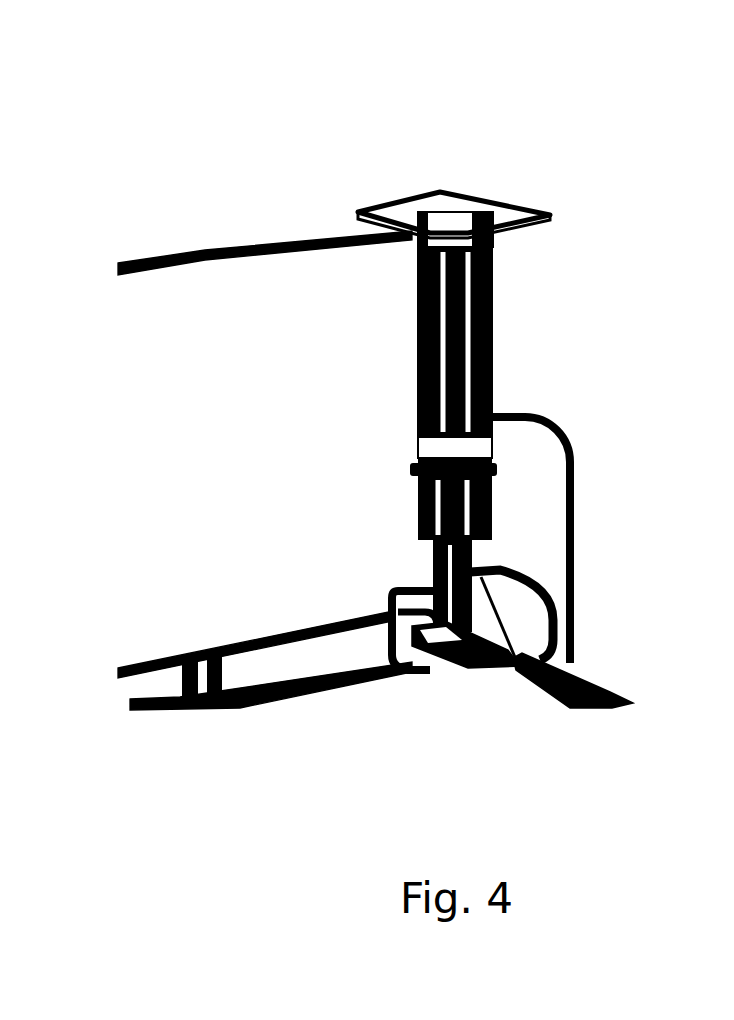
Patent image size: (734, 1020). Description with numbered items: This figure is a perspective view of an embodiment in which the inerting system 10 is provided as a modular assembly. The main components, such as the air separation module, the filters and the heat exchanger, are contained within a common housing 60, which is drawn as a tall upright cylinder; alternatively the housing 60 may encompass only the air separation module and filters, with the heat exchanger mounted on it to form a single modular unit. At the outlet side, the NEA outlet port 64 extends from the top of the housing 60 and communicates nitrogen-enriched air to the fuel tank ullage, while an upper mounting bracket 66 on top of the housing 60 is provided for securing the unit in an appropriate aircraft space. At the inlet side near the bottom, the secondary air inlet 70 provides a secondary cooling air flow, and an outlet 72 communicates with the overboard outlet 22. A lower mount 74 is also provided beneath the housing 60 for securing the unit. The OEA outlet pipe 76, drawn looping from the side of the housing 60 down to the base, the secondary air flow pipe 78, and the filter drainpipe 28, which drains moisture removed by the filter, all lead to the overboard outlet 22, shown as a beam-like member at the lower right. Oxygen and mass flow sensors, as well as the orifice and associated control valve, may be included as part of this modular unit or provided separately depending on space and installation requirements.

The system 10 is at (584, 113).
The overboard outlet 22 is at (606, 708).
The filter drainpipe 28 is at (500, 626).
The common housing 60 is at (494, 305).
The NEA outlet port 64 is at (377, 241).
The upper mounting bracket 66 is at (418, 195).
The secondary air inlet 70 is at (428, 588).
The outlet 72 is at (480, 552).
The lower mount 74 is at (475, 667).
The OEA outlet pipe 76 is at (573, 458).
The secondary air flow pipe 78 is at (520, 575).